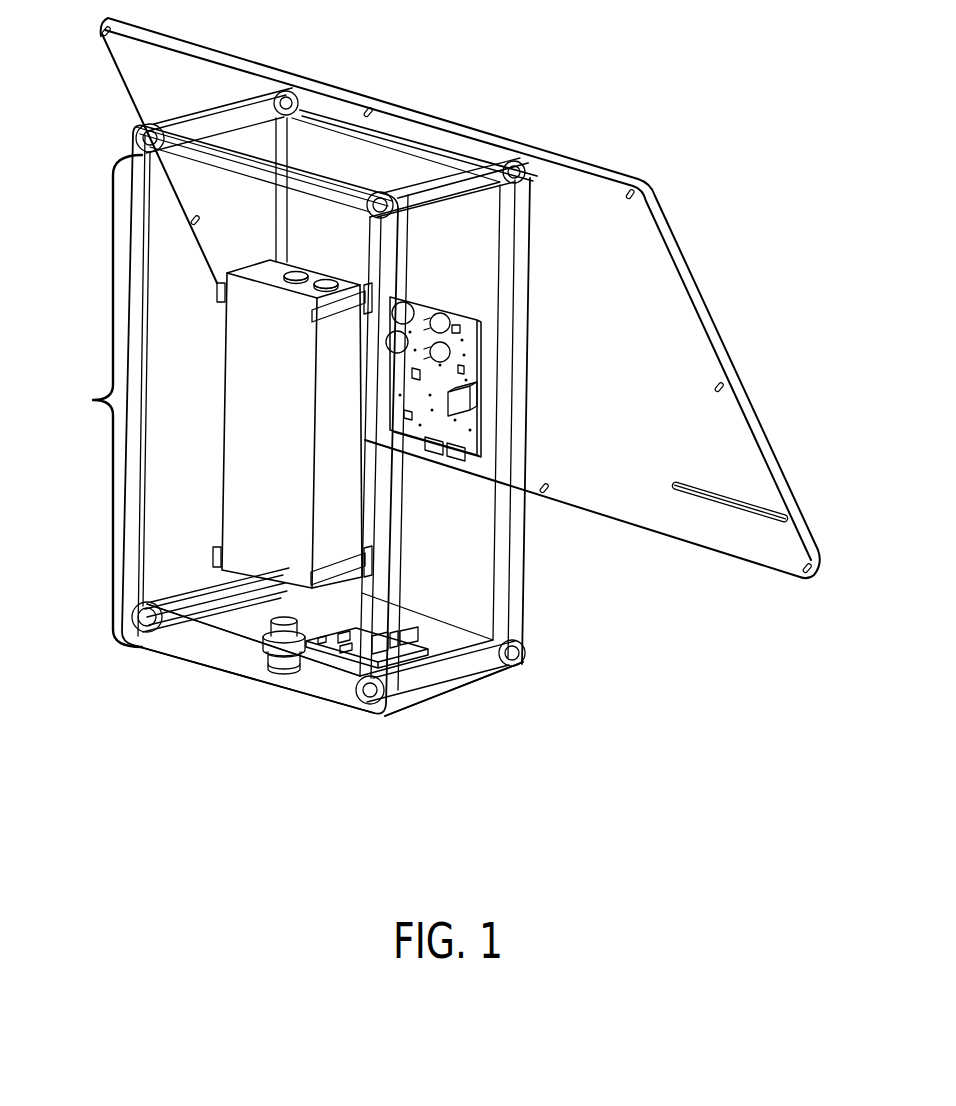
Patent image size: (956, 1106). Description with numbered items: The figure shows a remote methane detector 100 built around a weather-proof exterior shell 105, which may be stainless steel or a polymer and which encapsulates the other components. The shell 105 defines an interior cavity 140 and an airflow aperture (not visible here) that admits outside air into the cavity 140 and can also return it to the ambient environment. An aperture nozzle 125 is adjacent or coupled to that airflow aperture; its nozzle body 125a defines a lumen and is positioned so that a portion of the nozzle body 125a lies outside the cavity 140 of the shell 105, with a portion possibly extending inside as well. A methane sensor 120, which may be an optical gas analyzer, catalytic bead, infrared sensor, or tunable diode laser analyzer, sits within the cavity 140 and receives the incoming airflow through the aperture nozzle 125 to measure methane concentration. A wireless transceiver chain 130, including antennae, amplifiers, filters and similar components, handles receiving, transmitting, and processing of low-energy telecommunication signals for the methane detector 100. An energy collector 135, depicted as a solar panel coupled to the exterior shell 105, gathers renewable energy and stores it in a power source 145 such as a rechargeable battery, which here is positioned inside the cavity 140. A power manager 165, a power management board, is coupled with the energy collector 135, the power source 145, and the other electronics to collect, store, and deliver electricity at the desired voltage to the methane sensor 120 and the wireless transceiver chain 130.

The methane detector 100 is at (243, 756).
The exterior shell 105 is at (513, 624).
The methane sensor 120 is at (381, 619).
The aperture nozzle 125 is at (441, 686).
The nozzle body 125a is at (409, 681).
The wireless transceiver chain 130 is at (410, 637).
The energy collector 135 is at (616, 170).
The cavity 140 is at (95, 401).
The power source 145 is at (248, 360).
The power manager 165 is at (437, 317).